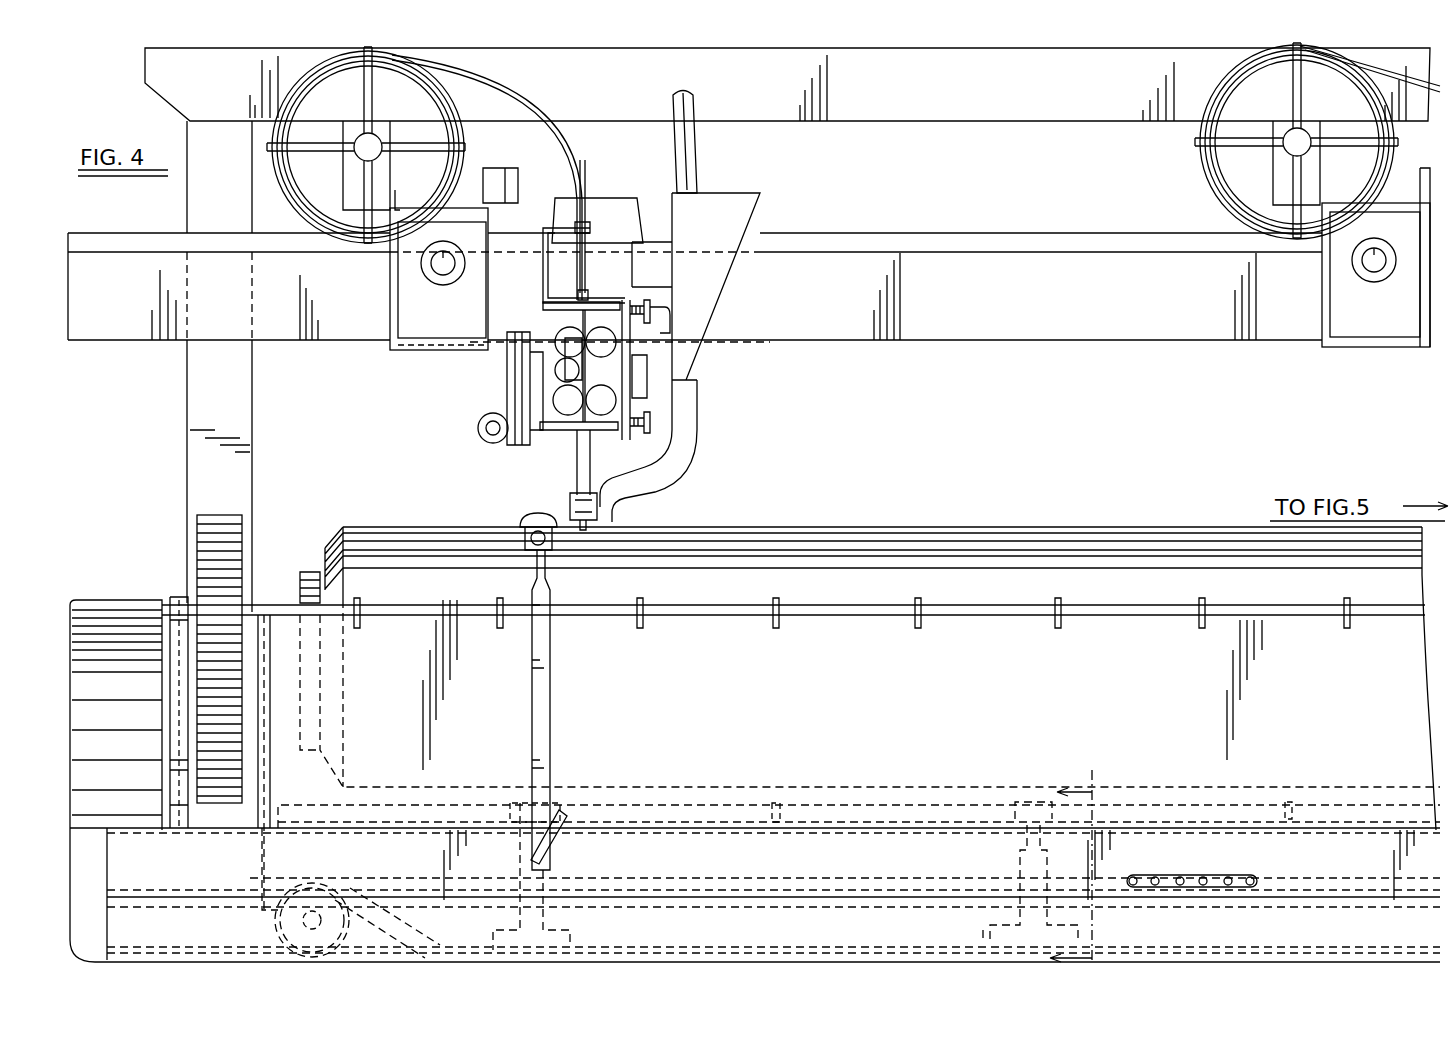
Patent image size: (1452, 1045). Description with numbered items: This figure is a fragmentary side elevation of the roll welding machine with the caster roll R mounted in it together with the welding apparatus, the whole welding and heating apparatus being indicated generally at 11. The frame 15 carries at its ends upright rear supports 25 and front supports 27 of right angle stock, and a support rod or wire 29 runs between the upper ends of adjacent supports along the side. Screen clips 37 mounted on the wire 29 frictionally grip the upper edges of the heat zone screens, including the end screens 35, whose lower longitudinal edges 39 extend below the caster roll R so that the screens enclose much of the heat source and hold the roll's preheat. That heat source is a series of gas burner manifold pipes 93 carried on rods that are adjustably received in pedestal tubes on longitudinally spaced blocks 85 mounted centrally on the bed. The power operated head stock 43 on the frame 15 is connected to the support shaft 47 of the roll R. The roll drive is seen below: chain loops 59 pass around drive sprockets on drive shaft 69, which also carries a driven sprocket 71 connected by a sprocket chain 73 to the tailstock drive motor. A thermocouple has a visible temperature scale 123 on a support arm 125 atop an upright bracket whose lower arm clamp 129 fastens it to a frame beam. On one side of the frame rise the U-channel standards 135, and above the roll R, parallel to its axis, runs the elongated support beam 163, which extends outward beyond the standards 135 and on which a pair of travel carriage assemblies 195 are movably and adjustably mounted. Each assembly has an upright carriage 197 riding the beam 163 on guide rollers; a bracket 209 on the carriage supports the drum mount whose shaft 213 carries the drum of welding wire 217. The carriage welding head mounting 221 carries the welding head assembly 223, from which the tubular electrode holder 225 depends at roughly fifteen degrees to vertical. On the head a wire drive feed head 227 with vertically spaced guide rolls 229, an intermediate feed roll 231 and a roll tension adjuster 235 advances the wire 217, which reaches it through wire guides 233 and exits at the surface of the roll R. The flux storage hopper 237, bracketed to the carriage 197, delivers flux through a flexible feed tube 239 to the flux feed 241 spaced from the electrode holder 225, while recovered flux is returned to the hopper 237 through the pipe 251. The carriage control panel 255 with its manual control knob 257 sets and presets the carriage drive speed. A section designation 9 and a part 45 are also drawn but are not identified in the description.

The section line 9- 9 is at (1082, 858).
The welding and heating apparatus 11 is at (1255, 504).
The frame 15 is at (1322, 934).
The upright rear supports 25 is at (173, 778).
The front supports 27 is at (258, 870).
The support rod or wire 29 is at (1115, 597).
The end screens 35 is at (1150, 703).
The screen clips 37 is at (770, 600).
The lower longitudinal edges of the screens 39 is at (770, 906).
The power operated head stock 43 is at (232, 522).
The hub 45 is at (118, 617).
The support shaft 47 is at (252, 637).
The chain loops 59 is at (1240, 875).
The drive shaft 69 is at (275, 926).
The driven sprocket 71 is at (362, 900).
The sprocket chain 73 is at (400, 937).
The longitudinally spaced blocks 85 is at (572, 935).
The gas burner manifold pipes 93 is at (693, 815).
The visible temperature scale 123 is at (522, 520).
The support arm 125 is at (552, 702).
The arm clamp 129 is at (560, 830).
The upright spaced standards 135 is at (245, 468).
The elongated support beam 163 is at (1017, 272).
The travel carriage assemblies 195 is at (543, 190).
The upright carriage 197 is at (470, 348).
The bracket 209 is at (380, 191).
The drum mount shaft 213 is at (363, 135).
The welding wire 217 is at (553, 115).
The carriage welding head mounting 221 is at (548, 288).
The welding head assembly 223 is at (617, 210).
The tubular electrode holder 225 is at (588, 480).
The wire drive feed head 227 is at (616, 383).
The guide rolls 229 is at (557, 333).
The feed roll 231 is at (585, 378).
The wire guides 233 is at (543, 245).
The roll tension adjuster 235 is at (655, 427).
The flux storage hopper 237 is at (742, 222).
The flexible feed tube 239 is at (682, 455).
The flux feed 241 is at (600, 521).
The flux return pipe 251 is at (690, 182).
The carriage control panel 255 is at (410, 320).
The manual control 257 is at (428, 273).
The caster roll R is at (1037, 516).